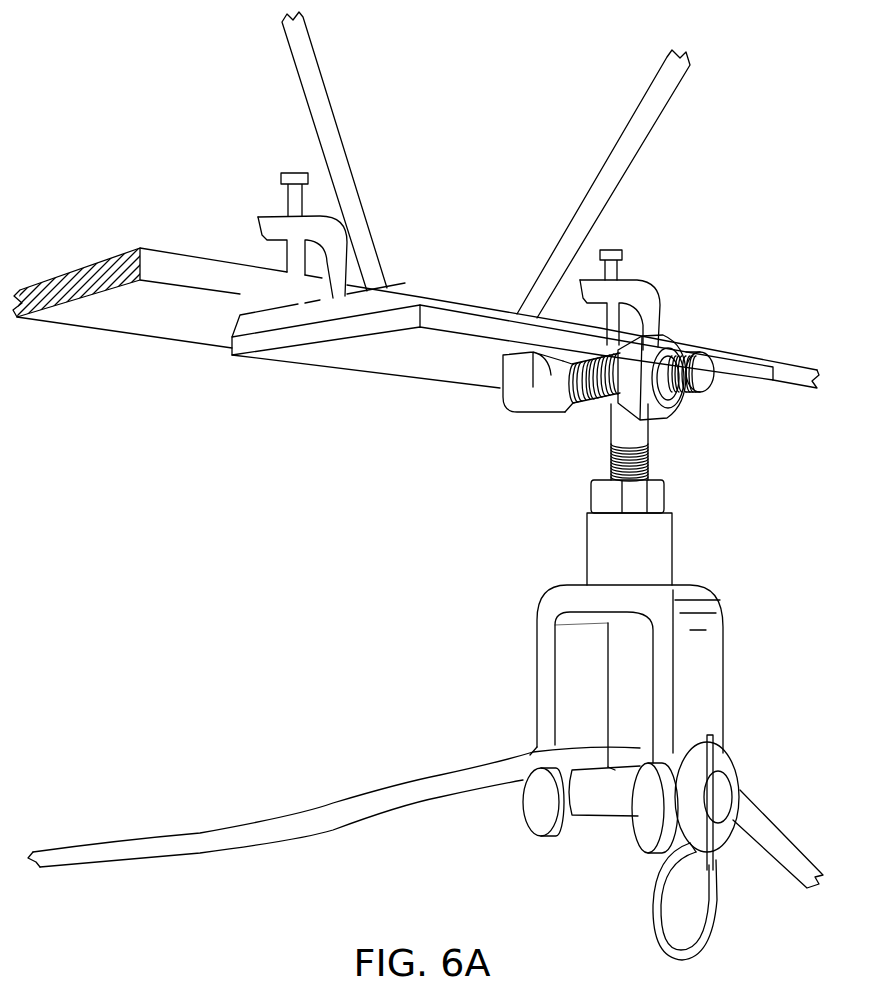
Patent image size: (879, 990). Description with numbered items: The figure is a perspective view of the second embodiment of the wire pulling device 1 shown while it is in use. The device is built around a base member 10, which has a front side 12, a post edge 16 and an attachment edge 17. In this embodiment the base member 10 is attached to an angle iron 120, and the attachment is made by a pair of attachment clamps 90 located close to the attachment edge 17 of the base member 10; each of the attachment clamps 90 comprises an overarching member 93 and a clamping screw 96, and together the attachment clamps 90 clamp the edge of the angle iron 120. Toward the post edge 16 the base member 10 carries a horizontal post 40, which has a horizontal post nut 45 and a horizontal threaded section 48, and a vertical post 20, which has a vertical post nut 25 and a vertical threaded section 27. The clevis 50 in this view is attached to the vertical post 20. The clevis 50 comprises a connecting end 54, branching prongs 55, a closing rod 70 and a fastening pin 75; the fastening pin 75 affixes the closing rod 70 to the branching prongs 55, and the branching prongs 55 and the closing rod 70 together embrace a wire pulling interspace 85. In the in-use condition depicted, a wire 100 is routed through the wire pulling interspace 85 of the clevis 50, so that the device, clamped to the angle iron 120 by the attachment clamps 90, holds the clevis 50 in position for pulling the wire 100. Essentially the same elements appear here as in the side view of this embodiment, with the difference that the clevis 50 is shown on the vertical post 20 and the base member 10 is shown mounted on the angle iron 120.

The wire pulling device 1 is at (143, 521).
The base member 10 is at (342, 393).
The front side 12 is at (435, 370).
The post edge 16 is at (757, 368).
The attachment edge 17 is at (468, 387).
The vertical post 20 is at (688, 457).
The vertical post nut 25 is at (654, 497).
The vertical threaded section 27 is at (609, 460).
The horizontal post 40 is at (500, 423).
The horizontal post nut 45 is at (645, 417).
The horizontal threaded section 48 is at (588, 404).
The clevis 50 is at (548, 563).
The connecting end 54 is at (659, 548).
The branching prongs 55 is at (548, 668).
The closing rod 70 is at (628, 803).
The fastening pin 75 is at (713, 933).
The wire pulling interspace 85 is at (627, 707).
The attachment clamps 90 is at (243, 250).
The overarching member 93 is at (267, 220).
The clamping screw 96 is at (293, 170).
The cable 100 is at (445, 785).
The angle iron 120 is at (150, 322).